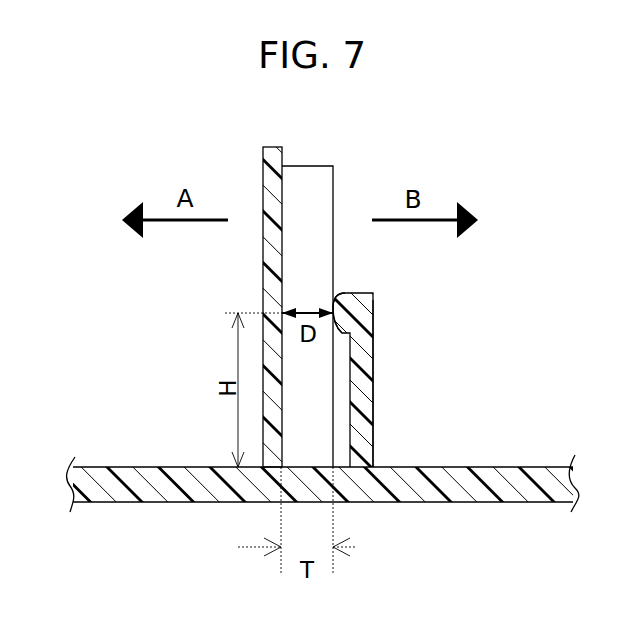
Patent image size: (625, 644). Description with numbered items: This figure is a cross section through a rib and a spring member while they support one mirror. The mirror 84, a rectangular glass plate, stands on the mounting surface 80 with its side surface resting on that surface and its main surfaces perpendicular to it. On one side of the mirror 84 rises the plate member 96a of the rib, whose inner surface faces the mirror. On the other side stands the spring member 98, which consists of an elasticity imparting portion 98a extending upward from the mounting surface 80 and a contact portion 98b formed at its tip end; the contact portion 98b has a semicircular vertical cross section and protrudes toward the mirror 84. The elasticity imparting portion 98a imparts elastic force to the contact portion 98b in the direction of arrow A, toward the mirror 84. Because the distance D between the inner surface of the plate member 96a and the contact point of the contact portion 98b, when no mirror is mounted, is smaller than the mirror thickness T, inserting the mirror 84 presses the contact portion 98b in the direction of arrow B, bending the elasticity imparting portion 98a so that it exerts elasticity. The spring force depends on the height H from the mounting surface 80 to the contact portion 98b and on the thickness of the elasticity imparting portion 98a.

The mounting surface 80 is at (117, 467).
The mirror 84 is at (318, 197).
The plate member 96a is at (262, 174).
The spring member 98 is at (383, 347).
The elasticity imparting portion 98a is at (373, 373).
The contact portion 98b is at (333, 300).